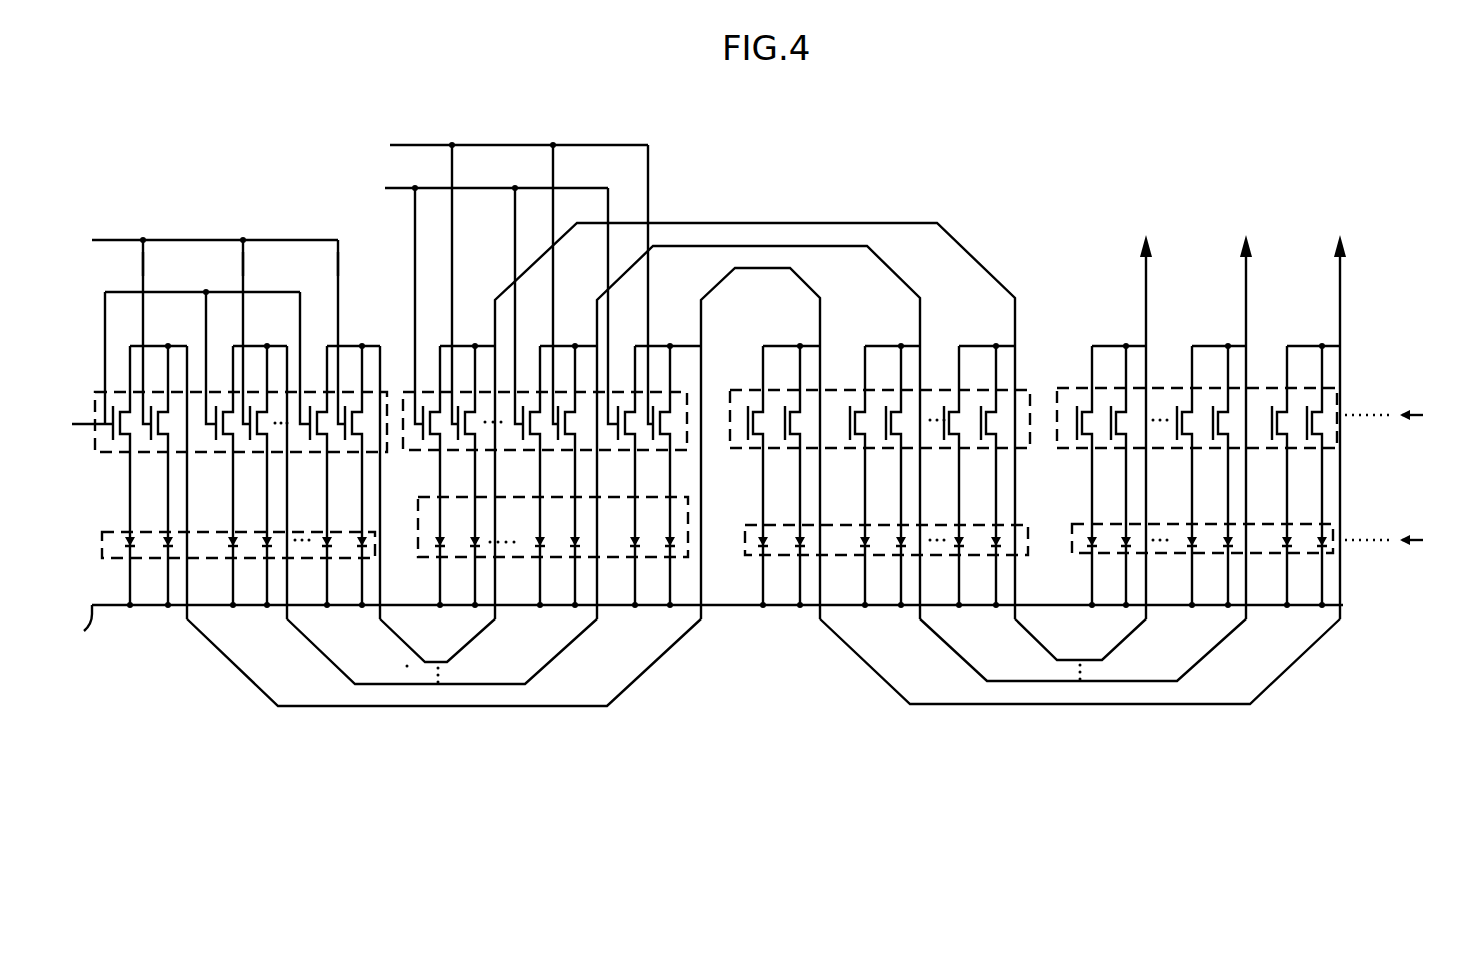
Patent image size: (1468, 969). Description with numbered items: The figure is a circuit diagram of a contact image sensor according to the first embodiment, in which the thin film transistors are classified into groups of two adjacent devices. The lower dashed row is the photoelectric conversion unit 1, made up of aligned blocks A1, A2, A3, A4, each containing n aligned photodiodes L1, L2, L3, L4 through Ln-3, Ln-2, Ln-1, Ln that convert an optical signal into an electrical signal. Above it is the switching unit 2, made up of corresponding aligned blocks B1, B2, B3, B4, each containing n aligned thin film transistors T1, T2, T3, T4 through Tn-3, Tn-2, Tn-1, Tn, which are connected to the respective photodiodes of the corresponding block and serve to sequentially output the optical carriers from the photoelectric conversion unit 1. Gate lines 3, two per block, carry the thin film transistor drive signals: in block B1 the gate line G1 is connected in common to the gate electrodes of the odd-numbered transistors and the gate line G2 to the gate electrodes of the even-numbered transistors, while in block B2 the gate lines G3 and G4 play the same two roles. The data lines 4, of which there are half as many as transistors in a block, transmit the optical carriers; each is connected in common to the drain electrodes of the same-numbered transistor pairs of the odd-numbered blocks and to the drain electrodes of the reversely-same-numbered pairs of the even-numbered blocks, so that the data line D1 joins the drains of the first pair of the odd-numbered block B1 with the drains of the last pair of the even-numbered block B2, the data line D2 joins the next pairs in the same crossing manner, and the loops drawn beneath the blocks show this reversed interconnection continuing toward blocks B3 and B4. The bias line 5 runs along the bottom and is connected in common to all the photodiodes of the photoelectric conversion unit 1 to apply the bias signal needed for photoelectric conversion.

The photoelectric conversion unit 1 is at (1393, 542).
The switching unit 2 is at (1393, 417).
The gate lines 3 is at (93, 452).
The data lines 4 is at (780, 346).
The bias line 5 is at (704, 627).
The gate line G1 is at (182, 362).
The gate line G2 is at (200, 326).
The gate line G3 is at (479, 300).
The gate line G4 is at (504, 278).
The switching unit block B1 is at (97, 392).
The switching unit block B2 is at (425, 392).
The switching unit block B3 is at (732, 448).
The switching unit block B4 is at (1072, 388).
The photoelectric conversion block A1 is at (102, 537).
The photoelectric conversion block A2 is at (422, 497).
The photoelectric conversion block A3 is at (745, 543).
The photoelectric conversion block A4 is at (1072, 542).
The thin film transistor T1 is at (448, 462).
The thin film transistor T2 is at (507, 462).
The thin film transistor T3 is at (223, 420).
The thin film transistor T4 is at (257, 420).
The thin film transistor Tn-3 is at (530, 420).
The thin film transistor Tn-2 is at (565, 420).
The thin film transistor Tn-1 is at (651, 455).
The thin film transistor Tn is at (680, 458).
The photoelectric converter L1 is at (425, 570).
The photoelectric converter L2 is at (462, 570).
The photoelectric converter L3 is at (230, 541).
The photoelectric converter L4 is at (265, 540).
The photoelectric converter Ln-3 is at (538, 540).
The photoelectric converter Ln-2 is at (573, 540).
The photoelectric converter Ln-1 is at (616, 548).
The photoelectric converter Ln is at (655, 570).
The data line D1 is at (582, 707).
The data line D2 is at (553, 657).